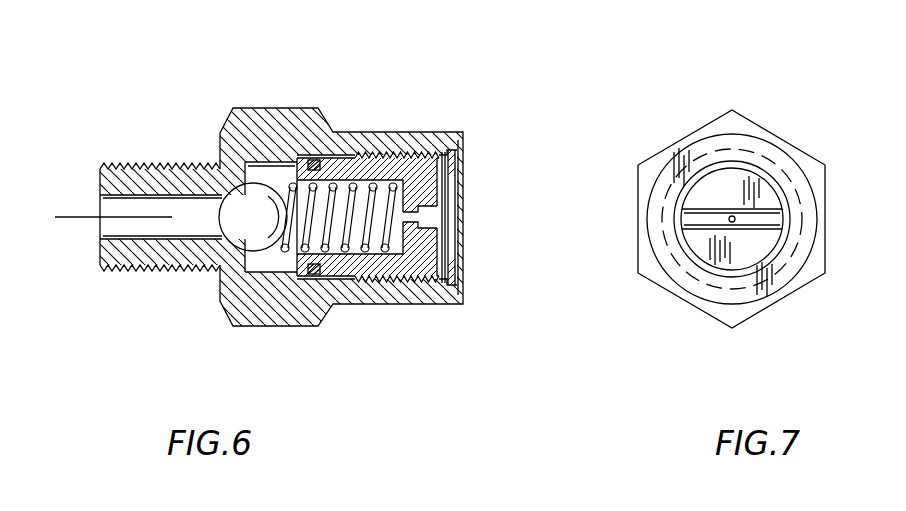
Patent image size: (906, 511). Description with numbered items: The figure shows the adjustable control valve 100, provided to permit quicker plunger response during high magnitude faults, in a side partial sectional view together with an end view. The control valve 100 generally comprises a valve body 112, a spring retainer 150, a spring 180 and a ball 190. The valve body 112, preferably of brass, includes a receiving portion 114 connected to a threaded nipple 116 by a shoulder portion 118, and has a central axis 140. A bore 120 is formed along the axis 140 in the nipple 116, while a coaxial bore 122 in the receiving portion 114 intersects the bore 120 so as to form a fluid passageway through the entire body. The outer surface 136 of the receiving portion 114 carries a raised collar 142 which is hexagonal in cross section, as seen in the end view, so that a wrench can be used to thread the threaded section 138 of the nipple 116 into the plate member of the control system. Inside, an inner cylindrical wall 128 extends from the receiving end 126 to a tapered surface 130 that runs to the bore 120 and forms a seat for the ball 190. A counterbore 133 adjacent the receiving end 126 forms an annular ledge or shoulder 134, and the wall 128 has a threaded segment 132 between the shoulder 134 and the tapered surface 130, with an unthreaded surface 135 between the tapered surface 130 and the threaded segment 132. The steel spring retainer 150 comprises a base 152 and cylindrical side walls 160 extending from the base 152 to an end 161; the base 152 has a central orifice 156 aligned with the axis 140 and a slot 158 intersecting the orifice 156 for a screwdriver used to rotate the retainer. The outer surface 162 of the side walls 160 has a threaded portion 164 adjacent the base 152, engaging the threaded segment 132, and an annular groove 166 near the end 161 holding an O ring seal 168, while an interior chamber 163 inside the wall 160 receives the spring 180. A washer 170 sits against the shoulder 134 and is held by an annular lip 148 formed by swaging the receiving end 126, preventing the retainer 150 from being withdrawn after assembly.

In FIG. 6, the adjustable control valve 100 is at (437, 92).
In FIG. 6, the valve body 112 is at (258, 132).
In FIG. 6, the receiving portion 114 is at (390, 160).
In FIG. 6, the threaded nipple 116 is at (127, 162).
In FIG. 6, the shoulder portion 118 is at (197, 265).
In FIG. 6, the bore 120 is at (107, 229).
In FIG. 6, the coaxial bore 122 is at (257, 258).
In FIG. 6, the receiving end 126 is at (463, 133).
In FIG. 6, the inner cylindrical wall 128 is at (289, 160).
In FIG. 6, the tapered surface 130 is at (233, 110).
In FIG. 6, the threaded segment 132 is at (412, 273).
In FIG. 6, the counterbore 133 is at (458, 293).
In FIG. 6, the annular ledge or shoulder 134 is at (445, 290).
In FIG. 6, the unthreaded surface 135 is at (290, 268).
In FIG. 7, the outer surface 136 is at (785, 140).
In FIG. 6, the threaded section 138 is at (149, 160).
In FIG. 6, the central axis 140 is at (67, 214).
In FIG. 6, the raised collar 142 is at (243, 327).
In FIG. 7, the raised collar 142 is at (745, 117).
In FIG. 6, the annular lip 148 is at (460, 275).
In FIG. 6, the spring retainer 150 is at (452, 177).
In FIG. 6, the base 152 is at (443, 197).
In FIG. 7, the base 152 is at (762, 197).
In FIG. 6, the orifice 156 is at (425, 215).
In FIG. 7, the orifice 156 is at (737, 227).
In FIG. 6, the slot 158 is at (425, 219).
In FIG. 7, the slot 158 is at (773, 222).
In FIG. 6, the cylindrical side walls 160 is at (365, 160).
In FIG. 6, the end 161 is at (283, 262).
In FIG. 6, the outer surface 162 is at (340, 160).
In FIG. 6, the interior chamber 163 is at (393, 272).
In FIG. 6, the threaded portion 164 is at (423, 160).
In FIG. 6, the annular groove 166 is at (353, 275).
In FIG. 6, the O ring seal 168 is at (315, 160).
In FIG. 6, the washer 170 is at (465, 148).
In FIG. 7, the washer 170 is at (713, 168).
In FIG. 6, the spring 180 is at (247, 267).
In FIG. 6, the ball 190 is at (230, 197).